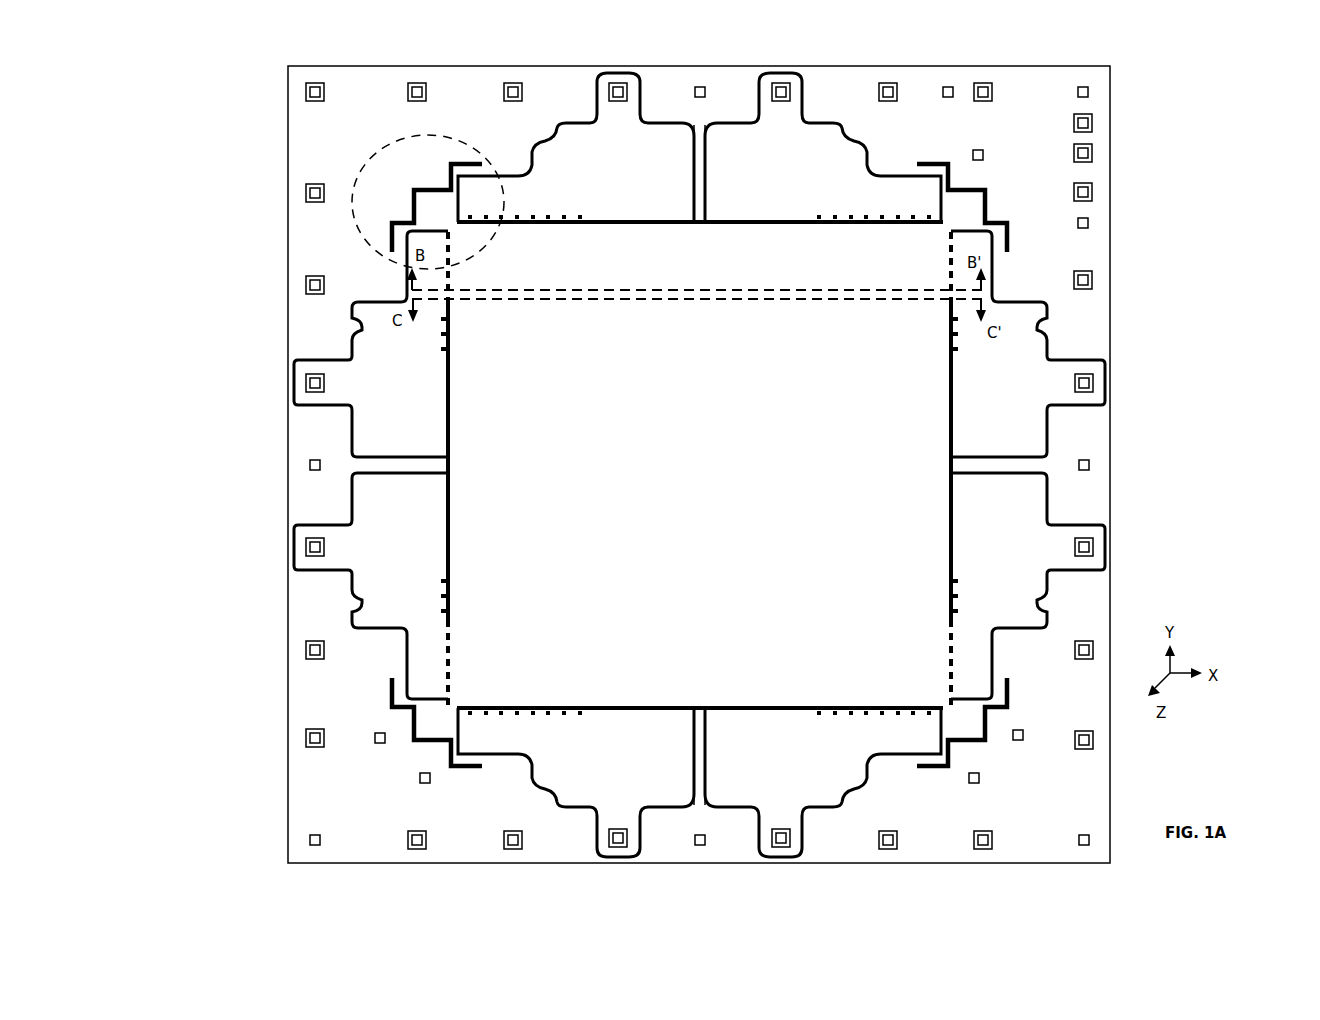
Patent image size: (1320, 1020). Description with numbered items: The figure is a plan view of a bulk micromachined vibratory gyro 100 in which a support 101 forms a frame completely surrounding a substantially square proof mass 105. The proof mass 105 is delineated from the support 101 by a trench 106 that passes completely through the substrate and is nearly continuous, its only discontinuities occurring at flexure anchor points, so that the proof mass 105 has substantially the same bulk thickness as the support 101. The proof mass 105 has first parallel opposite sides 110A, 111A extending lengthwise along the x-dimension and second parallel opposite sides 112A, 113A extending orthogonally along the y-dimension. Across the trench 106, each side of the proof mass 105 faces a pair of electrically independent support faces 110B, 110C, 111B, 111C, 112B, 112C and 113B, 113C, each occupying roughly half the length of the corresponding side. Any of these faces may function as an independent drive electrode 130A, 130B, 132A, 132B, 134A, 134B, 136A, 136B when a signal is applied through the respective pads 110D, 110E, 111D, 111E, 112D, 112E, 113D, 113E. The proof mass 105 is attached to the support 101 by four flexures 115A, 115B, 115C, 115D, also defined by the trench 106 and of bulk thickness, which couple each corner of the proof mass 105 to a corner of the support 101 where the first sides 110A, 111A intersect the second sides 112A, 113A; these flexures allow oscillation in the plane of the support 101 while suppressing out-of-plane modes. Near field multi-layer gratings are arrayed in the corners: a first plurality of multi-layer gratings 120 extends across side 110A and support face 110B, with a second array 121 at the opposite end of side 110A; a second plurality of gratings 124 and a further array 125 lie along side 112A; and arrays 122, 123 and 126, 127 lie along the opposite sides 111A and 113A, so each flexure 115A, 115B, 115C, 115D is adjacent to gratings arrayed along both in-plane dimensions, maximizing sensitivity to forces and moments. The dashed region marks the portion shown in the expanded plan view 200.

The bulk micromachined vibratory gyro 100 is at (272, 102).
The support 101 is at (378, 145).
The proof mass 105 is at (694, 423).
The trench 106 is at (649, 707).
The first side of proof mass 110A is at (722, 225).
The electrically independent support face 110B is at (633, 220).
The electrically independent support face 110C is at (745, 220).
The pad 110D is at (620, 85).
The pad 110E is at (785, 85).
The first side of proof mass 111A is at (765, 706).
The electrically independent support face 111B is at (632, 712).
The electrically independent support face 111C is at (745, 712).
The pad 111D is at (600, 840).
The pad 111E is at (832, 836).
The second side of proof mass 112A is at (450, 418).
The electrically independent support face 112B is at (444, 393).
The electrically independent support face 112C is at (444, 492).
The pad 112D is at (298, 385).
The pad 112E is at (298, 549).
The second side of proof mass 113A is at (948, 418).
The electrically independent support face 113B is at (956, 405).
The electrically independent support face 113C is at (956, 490).
The pad 113D is at (1106, 383).
The pad 113E is at (1106, 548).
The flexure 115A is at (427, 208).
The flexure 115B is at (968, 212).
The flexure 115C is at (962, 716).
The flexure 115D is at (437, 716).
The first plurality of multi-layer gratings 120 is at (565, 215).
The second one dimensional multi-layer grating array 121 is at (838, 215).
The multi-layer grating array 122 is at (578, 716).
The multi-layer grating array 123 is at (853, 716).
The second plurality of multi-layer gratings 124 is at (443, 350).
The multi-layer grating array 125 is at (443, 610).
The multi-layer grating array 126 is at (956, 350).
The multi-layer grating array 127 is at (956, 610).
The drive electrode 130A is at (636, 150).
The drive electrode 130B is at (809, 151).
The drive electrode 132A is at (576, 782).
The drive electrode 132B is at (823, 782).
The drive electrode 134A is at (401, 381).
The drive electrode 134B is at (401, 551).
The drive electrode 136A is at (1049, 393).
The drive electrode 136B is at (1044, 554).
The expanded plan view 200 is at (457, 135).